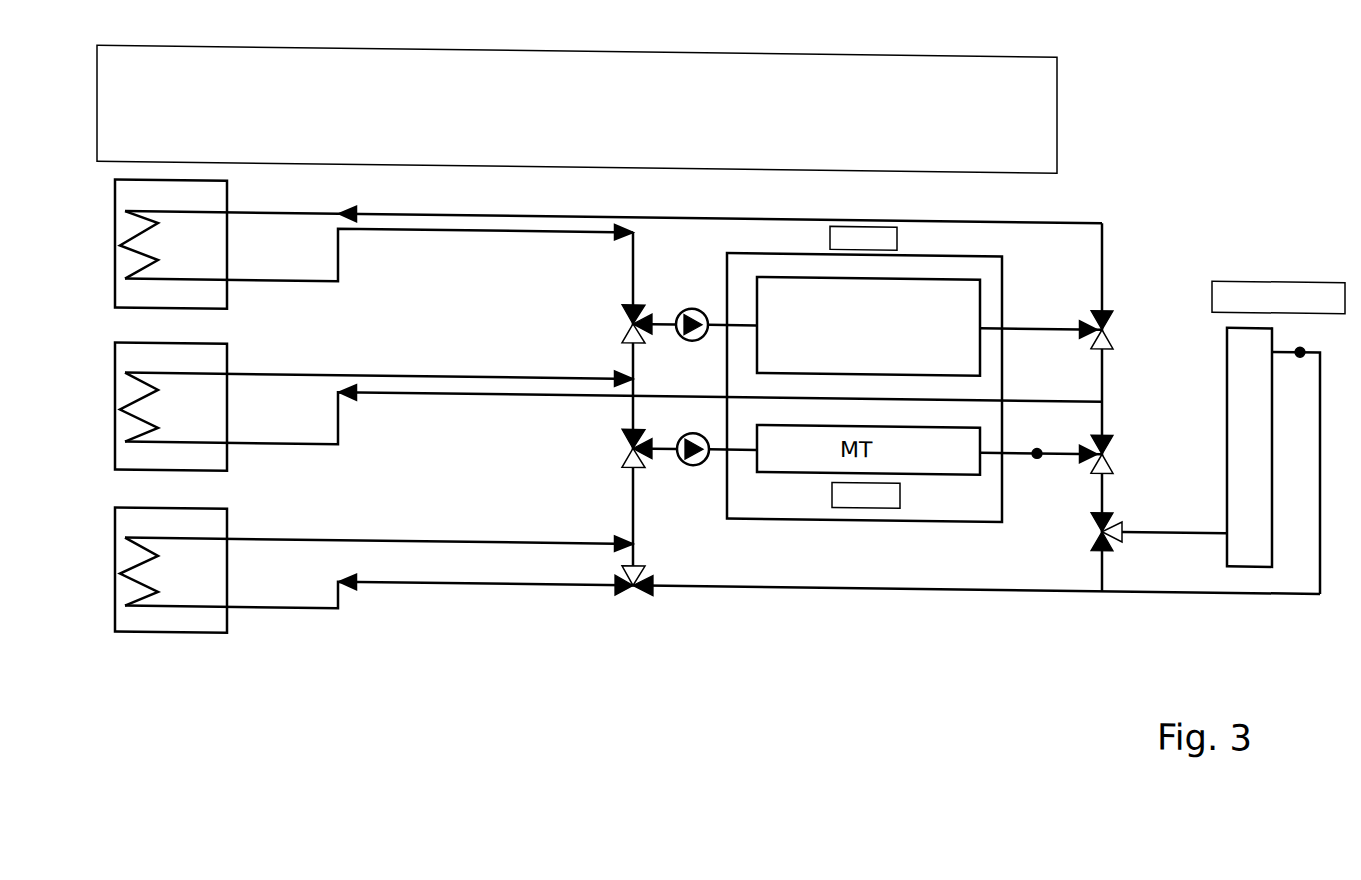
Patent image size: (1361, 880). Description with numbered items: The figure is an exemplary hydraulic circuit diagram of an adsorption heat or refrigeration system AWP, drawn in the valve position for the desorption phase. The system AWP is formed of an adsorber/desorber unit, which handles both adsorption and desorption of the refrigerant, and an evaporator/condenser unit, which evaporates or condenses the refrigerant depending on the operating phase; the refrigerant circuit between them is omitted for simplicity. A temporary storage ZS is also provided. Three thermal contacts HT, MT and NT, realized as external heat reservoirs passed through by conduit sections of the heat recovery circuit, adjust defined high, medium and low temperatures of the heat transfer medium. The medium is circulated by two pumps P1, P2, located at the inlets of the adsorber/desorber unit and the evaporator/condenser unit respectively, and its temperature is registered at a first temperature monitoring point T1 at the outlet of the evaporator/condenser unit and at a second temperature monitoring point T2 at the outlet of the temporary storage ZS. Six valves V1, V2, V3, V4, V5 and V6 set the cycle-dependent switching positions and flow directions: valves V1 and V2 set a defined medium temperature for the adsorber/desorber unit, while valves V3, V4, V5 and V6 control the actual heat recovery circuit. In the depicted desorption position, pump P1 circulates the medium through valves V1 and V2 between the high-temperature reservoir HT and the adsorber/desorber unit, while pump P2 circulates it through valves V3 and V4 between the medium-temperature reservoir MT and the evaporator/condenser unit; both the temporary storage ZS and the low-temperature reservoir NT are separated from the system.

The adsorption heat or refrigeration system AWP is at (927, 243).
The temporary storage ZS is at (1247, 319).
The high-temperature thermal contact HT is at (171, 243).
The medium-temperature thermal contact MT is at (171, 406).
The low-temperature thermal contact NT is at (171, 569).
The valve V1 is at (621, 323).
The valve V2 is at (1116, 330).
The valve V3 is at (621, 448).
The valve V4 is at (1120, 454).
The valve V5 is at (1087, 531).
The valve V6 is at (634, 598).
The pump P1 is at (692, 301).
The pump P2 is at (692, 475).
The first temperature monitoring point T1 is at (1037, 469).
The second temperature monitoring point T2 is at (1296, 470).